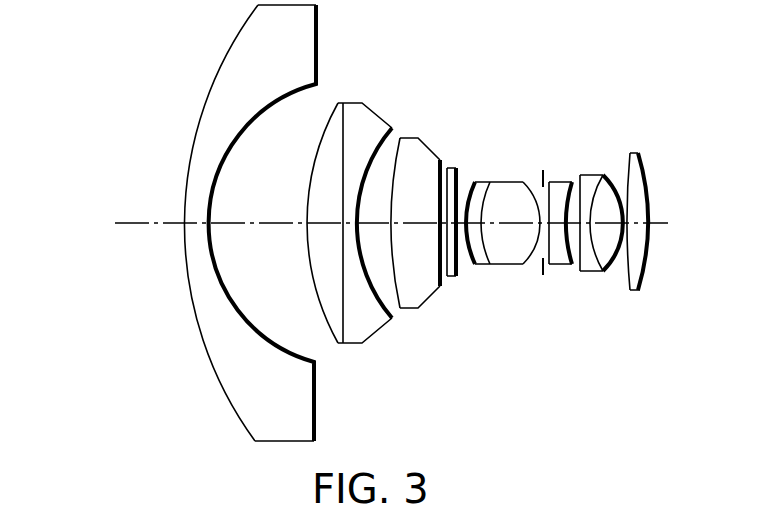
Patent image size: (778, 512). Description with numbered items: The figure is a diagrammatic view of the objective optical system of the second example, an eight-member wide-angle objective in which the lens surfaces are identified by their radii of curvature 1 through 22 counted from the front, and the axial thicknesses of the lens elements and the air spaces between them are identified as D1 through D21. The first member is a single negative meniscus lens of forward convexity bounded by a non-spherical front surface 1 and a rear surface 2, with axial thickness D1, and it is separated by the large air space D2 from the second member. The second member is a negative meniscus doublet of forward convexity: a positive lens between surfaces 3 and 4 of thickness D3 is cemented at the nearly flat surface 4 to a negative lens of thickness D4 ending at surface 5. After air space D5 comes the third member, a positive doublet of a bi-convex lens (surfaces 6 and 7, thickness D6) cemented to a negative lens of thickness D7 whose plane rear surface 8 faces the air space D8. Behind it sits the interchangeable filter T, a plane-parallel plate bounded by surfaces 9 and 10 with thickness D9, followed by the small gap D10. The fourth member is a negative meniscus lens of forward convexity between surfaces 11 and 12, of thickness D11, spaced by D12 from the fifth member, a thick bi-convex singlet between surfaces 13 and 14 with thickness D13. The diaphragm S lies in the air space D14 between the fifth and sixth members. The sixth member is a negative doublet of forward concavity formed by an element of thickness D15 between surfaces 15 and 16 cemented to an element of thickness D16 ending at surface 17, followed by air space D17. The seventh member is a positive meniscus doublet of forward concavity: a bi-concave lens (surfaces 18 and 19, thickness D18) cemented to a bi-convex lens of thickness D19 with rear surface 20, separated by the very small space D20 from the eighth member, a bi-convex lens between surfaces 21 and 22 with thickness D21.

The radius of curvature of first surface 1 is at (212, 372).
The radius of curvature of second surface 2 is at (247, 323).
The radius of curvature of third surface 3 is at (320, 312).
The radius of curvature of fourth surface 4 is at (381, 322).
The radius of curvature of fifth surface 5 is at (394, 308).
The radius of curvature of sixth surface 6 is at (403, 308).
The radius of curvature of seventh surface 7 is at (428, 300).
The radius of curvature of eighth surface 8 is at (441, 290).
The radius of curvature of ninth surface 9 is at (452, 278).
The radius of curvature of tenth surface 10 is at (460, 277).
The radius of curvature of eleventh surface 11 is at (472, 262).
The radius of curvature of twelfth surface 12 is at (500, 264).
The radius of curvature of thirteenth surface 13 is at (516, 264).
The radius of curvature of fourteenth surface 14 is at (536, 262).
The radius of curvature of fifteenth surface 15 is at (553, 265).
The radius of curvature of sixteenth surface 16 is at (568, 265).
The radius of curvature of seventeenth surface 17 is at (579, 273).
The radius of curvature of eighteenth surface 18 is at (590, 273).
The radius of curvature of nineteenth surface 19 is at (600, 278).
The radius of curvature of twentieth surface 20 is at (613, 278).
The radius of curvature of twenty-first surface 21 is at (624, 279).
The radius of curvature of twenty-second surface 22 is at (644, 290).
The interchangeable filter T is at (454, 167).
The diaphragm S is at (543, 170).
The axial thickness of first lens D1 is at (190, 221).
The axial air space between first and second members D2 is at (246, 222).
The axial thickness of positive lens of second member D3 is at (314, 222).
The axial thickness of negative lens of second member D4 is at (350, 221).
The axial air space between second and third members D5 is at (388, 221).
The axial thickness of bi-convex lens of third member D6 is at (399, 221).
The axial thickness of negative lens of third member D7 is at (431, 187).
The axial air space between third member and filter D8 is at (447, 187).
The axial thickness of filter D9 is at (462, 220).
The axial air space between filter and fourth member D10 is at (471, 215).
The axial thickness of fourth member D11 is at (479, 215).
The axial air space between fourth and fifth members D12 is at (483, 217).
The axial thickness of fifth member D13 is at (511, 211).
The axial air space between fifth and sixth members D14 is at (547, 200).
The axial thickness of front lens of sixth member D15 is at (560, 212).
The axial thickness of rear lens of sixth member D16 is at (576, 212).
The axial air space between sixth and seventh members D17 is at (586, 215).
The axial thickness of bi-concave lens of seventh member D18 is at (600, 215).
The axial thickness of bi-convex lens of seventh member D19 is at (625, 215).
The axial air space between seventh and eighth members D20 is at (635, 215).
The axial thickness of eighth member D21 is at (651, 222).